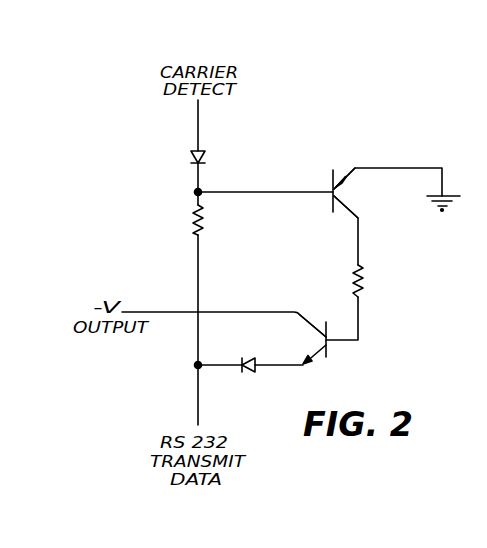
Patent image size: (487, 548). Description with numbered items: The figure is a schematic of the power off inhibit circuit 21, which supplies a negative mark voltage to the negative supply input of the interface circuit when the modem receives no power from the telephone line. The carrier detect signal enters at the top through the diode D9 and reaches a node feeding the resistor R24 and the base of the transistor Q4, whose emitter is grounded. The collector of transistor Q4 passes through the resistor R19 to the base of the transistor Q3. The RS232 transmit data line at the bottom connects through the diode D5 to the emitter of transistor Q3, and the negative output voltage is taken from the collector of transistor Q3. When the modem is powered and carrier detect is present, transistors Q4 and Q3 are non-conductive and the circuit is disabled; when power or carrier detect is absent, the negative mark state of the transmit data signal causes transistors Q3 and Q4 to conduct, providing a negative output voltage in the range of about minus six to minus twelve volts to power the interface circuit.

The power off inhibit circuit 21 is at (165, 255).
The diode (carrier detect input) D9 is at (182, 160).
The resistor R24 is at (222, 220).
The transistor Q4 is at (356, 193).
The resistor R19 is at (380, 281).
The transistor Q3 is at (302, 339).
The diode (transmit data) D5 is at (247, 379).